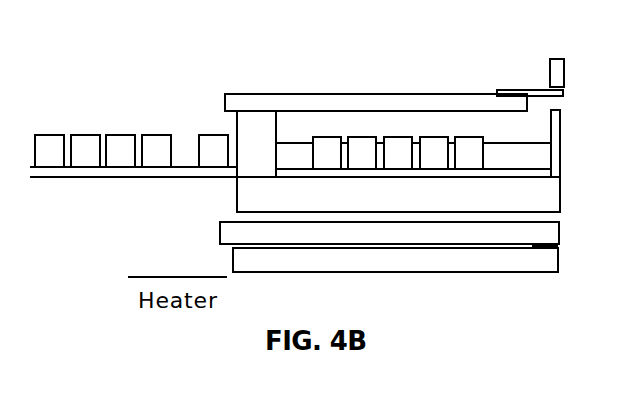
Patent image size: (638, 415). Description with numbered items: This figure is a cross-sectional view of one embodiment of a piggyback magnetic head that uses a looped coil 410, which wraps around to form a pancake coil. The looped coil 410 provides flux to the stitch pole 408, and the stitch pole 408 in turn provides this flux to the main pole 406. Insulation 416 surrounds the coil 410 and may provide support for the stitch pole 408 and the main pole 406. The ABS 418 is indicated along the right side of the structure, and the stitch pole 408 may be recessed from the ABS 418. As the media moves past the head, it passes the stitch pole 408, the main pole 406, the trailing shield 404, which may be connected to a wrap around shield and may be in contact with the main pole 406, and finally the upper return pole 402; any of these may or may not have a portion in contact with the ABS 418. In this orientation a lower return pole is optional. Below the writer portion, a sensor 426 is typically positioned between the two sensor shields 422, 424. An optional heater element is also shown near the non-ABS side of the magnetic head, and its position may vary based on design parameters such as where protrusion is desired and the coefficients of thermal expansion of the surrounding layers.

The upper return pole 402 is at (565, 69).
The trailing shield 404 is at (561, 147).
The main pole 406 is at (532, 91).
The stitch pole 408 is at (400, 94).
The looped coil 410 is at (468, 137).
The insulation 416 is at (447, 204).
The ABS 418 is at (564, 196).
The sensor shield 422 is at (220, 233).
The sensor shield 424 is at (233, 256).
The sensor 426 is at (551, 244).